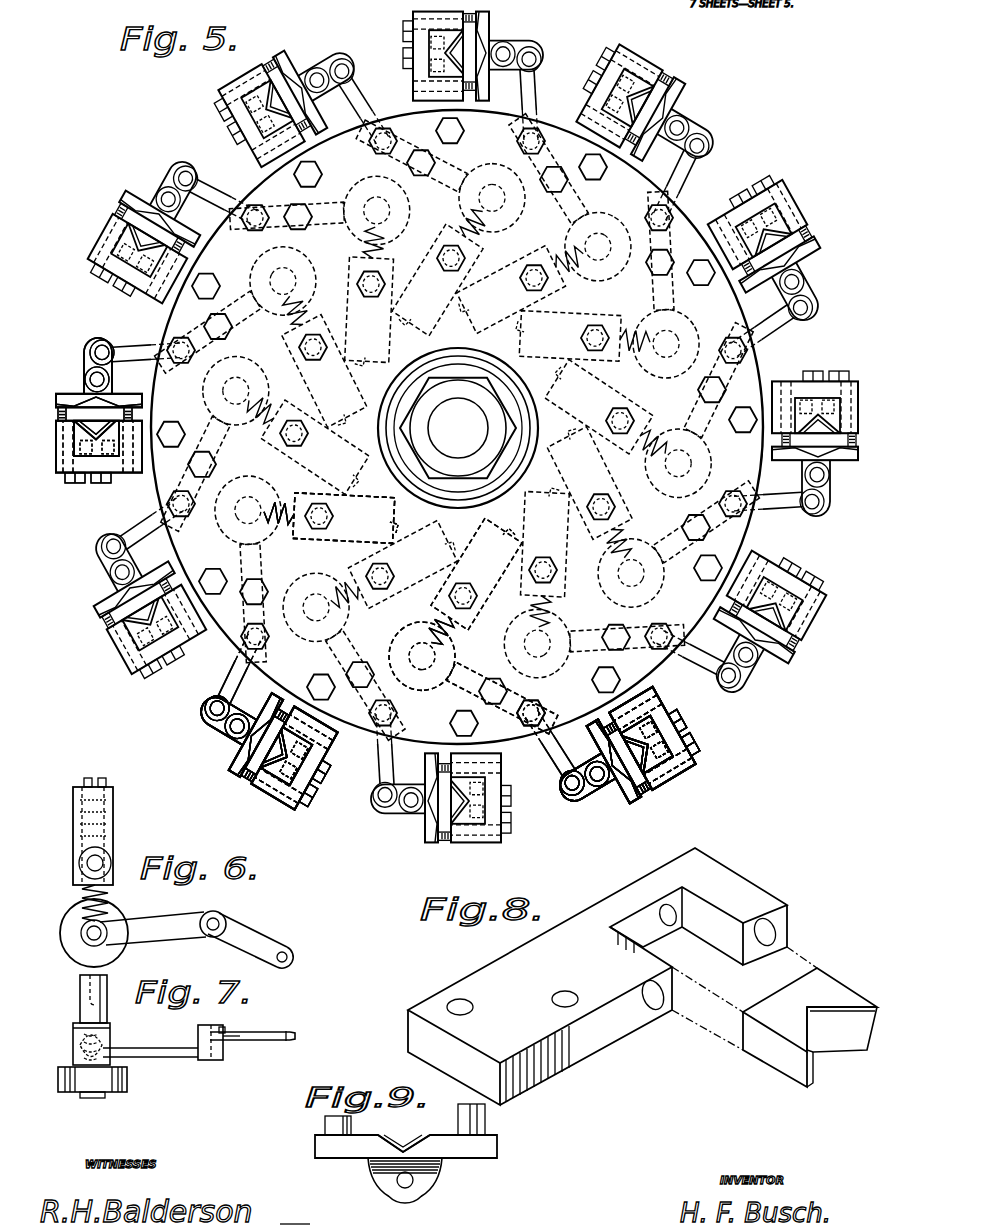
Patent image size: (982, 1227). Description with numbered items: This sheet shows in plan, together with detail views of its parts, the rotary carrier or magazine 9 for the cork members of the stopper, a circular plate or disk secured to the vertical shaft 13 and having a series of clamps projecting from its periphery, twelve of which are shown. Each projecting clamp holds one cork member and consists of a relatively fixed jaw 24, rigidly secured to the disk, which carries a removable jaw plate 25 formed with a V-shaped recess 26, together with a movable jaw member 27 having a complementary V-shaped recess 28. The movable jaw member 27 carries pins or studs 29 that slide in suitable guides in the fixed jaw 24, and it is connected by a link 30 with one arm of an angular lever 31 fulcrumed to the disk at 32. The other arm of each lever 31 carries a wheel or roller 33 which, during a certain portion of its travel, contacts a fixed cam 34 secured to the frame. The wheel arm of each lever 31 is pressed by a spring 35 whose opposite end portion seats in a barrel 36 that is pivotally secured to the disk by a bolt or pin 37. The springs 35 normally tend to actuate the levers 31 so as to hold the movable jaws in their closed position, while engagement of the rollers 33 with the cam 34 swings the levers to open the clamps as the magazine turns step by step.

In FIG. 5, the rotary carrier or magazine 9 is at (128, 488).
In FIG. 5, the vertical shaft 13 is at (458, 428).
In FIG. 5, the fixed jaw 24 is at (277, 793).
In FIG. 8, the fixed jaw 24 is at (612, 976).
In FIG. 5, the removable jaw plate 25 is at (687, 773).
In FIG. 8, the removable jaw plate 25 is at (810, 1027).
In FIG. 5, the V-shaped recess 26 is at (686, 780).
In FIG. 8, the V-shaped recess 26 is at (830, 1040).
In FIG. 5, the movable jaw member 27 is at (232, 747).
In FIG. 9, the movable jaw member 27 is at (460, 1152).
In FIG. 5, the complementary V-shaped recess 28 is at (613, 787).
In FIG. 9, the complementary V-shaped recess 28 is at (403, 1150).
In FIG. 5, the pins or studs 29 is at (248, 780).
In FIG. 9, the pins or studs 29 is at (485, 1123).
In FIG. 5, the link 30 is at (232, 715).
In FIG. 5, the angular lever 31 is at (237, 645).
In FIG. 6, the angular lever 31 is at (253, 937).
In FIG. 7, the angular lever 31 is at (199, 1049).
In FIG. 5, the fulcrum 32 is at (528, 704).
In FIG. 6, the fulcrum 32 is at (214, 916).
In FIG. 7, the fulcrum 32 is at (213, 1061).
In FIG. 5, the wheel or roller 33 is at (450, 652).
In FIG. 6, the wheel or roller 33 is at (123, 948).
In FIG. 7, the wheel or roller 33 is at (60, 1083).
In FIG. 5, the fixed cam 34 is at (393, 742).
In FIG. 5, the spring 35 is at (437, 618).
In FIG. 6, the spring 35 is at (112, 892).
In FIG. 7, the spring 35 is at (82, 1052).
In FIG. 5, the barrel 36 is at (370, 505).
In FIG. 6, the barrel 36 is at (113, 818).
In FIG. 7, the barrel 36 is at (80, 1043).
In FIG. 5, the bolt or pin 37 is at (333, 518).